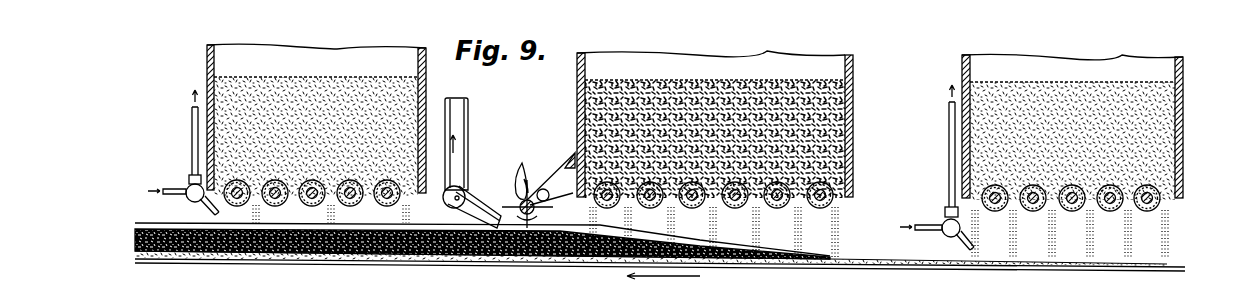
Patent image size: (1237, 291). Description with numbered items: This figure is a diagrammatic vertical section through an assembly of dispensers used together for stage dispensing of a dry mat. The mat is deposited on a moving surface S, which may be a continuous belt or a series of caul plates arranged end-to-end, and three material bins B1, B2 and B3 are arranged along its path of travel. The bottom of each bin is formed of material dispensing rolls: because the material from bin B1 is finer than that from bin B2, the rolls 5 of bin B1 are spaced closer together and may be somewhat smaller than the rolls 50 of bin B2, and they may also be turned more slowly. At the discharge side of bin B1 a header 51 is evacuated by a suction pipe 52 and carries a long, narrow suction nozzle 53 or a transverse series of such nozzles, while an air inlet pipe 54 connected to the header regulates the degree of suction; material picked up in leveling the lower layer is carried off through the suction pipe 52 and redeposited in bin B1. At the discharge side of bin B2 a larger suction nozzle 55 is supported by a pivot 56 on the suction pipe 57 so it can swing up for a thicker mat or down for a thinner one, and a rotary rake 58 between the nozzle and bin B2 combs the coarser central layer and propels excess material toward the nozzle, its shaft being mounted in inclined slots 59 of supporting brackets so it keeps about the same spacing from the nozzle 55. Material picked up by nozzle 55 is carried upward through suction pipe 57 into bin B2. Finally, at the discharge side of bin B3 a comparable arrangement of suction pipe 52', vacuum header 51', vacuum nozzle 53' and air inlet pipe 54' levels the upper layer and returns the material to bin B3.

The rolls 5 is at (1105, 214).
The rolls 50 is at (808, 211).
The header 51 is at (917, 236).
The suction pipe 52 is at (930, 146).
The suction nozzle 53 is at (949, 244).
The air inlet pipe 54 is at (931, 213).
The vacuum header 51' is at (160, 201).
The suction pipe 52' is at (169, 132).
The vacuum nozzle 53' is at (194, 209).
The air inlet pipe 54' is at (175, 178).
The suction nozzle 55 is at (470, 190).
The pivot 56 is at (455, 200).
The suction pipe 57 is at (455, 125).
The rotary rake 58 is at (521, 172).
The slots 59 is at (538, 190).
The material bin B1 is at (1183, 130).
The material bin B2 is at (853, 122).
The material bin B3 is at (207, 63).
The surface S is at (888, 268).